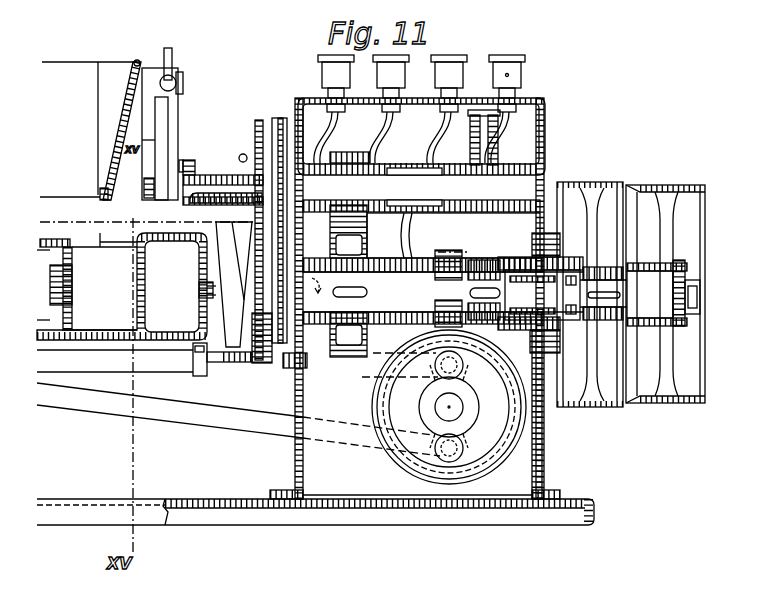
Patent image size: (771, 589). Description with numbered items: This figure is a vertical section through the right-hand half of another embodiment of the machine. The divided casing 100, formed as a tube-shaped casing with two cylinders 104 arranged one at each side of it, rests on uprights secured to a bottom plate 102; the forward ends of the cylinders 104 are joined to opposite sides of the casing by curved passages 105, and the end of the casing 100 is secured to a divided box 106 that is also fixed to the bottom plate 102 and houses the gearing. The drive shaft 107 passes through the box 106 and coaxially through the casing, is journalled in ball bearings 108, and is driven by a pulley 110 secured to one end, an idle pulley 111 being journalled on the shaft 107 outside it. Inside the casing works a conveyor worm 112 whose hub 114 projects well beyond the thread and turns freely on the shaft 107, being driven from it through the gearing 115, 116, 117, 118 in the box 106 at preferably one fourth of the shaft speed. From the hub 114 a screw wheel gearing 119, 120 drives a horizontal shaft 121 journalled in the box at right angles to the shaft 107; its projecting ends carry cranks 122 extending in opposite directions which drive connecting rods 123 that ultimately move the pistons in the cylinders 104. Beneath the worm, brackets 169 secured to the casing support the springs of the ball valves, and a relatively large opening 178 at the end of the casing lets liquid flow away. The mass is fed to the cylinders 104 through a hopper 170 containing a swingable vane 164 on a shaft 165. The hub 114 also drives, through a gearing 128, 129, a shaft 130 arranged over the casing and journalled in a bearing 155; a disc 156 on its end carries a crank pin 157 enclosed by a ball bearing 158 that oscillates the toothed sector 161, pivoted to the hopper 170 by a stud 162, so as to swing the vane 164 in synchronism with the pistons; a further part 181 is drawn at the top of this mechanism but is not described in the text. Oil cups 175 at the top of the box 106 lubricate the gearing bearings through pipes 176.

The divided casing 100 is at (272, 360).
The bottom plate 102 is at (247, 498).
The cylinders 104 is at (87, 281).
The curved passages 105 is at (126, 286).
The divided box 106 is at (353, 497).
The drive shaft 107 is at (663, 293).
The ball bearings 108 is at (557, 282).
The pulley 110 is at (602, 186).
The idle pulley 111 is at (684, 186).
The conveyor worm 112 is at (234, 284).
The hub 114 is at (461, 291).
The gearing 115 is at (492, 329).
The gearing 116 is at (470, 232).
The gearing 117 is at (352, 155).
The gearing 118 is at (363, 281).
The screw wheel gearing 119 is at (443, 250).
The screw wheel gearing 120 is at (449, 407).
The horizontal shaft 121 is at (460, 406).
The cranks 122 is at (462, 365).
The connecting rods 123 is at (262, 430).
The gearing 128 is at (280, 309).
The gearing 129 is at (281, 118).
The shaft 130 is at (205, 187).
The bearing 155 is at (213, 182).
The disc 156 is at (187, 212).
The crank pin 157 is at (188, 168).
The ball bearing 158 is at (181, 164).
The toothed sector 161 is at (148, 124).
The stud 162 is at (181, 76).
The swingable vane 164 is at (71, 128).
The shaft 165 is at (100, 197).
The brackets 169 is at (199, 376).
The hopper 170 is at (112, 64).
The oil cups 175 is at (459, 55).
The pipes 176 is at (334, 118).
The opening 178 is at (241, 357).
The knob 181 is at (170, 48).